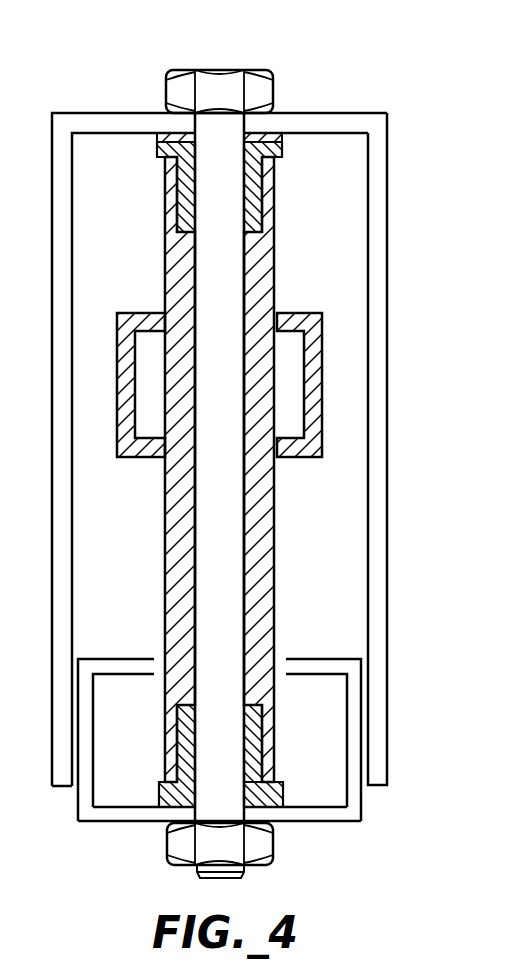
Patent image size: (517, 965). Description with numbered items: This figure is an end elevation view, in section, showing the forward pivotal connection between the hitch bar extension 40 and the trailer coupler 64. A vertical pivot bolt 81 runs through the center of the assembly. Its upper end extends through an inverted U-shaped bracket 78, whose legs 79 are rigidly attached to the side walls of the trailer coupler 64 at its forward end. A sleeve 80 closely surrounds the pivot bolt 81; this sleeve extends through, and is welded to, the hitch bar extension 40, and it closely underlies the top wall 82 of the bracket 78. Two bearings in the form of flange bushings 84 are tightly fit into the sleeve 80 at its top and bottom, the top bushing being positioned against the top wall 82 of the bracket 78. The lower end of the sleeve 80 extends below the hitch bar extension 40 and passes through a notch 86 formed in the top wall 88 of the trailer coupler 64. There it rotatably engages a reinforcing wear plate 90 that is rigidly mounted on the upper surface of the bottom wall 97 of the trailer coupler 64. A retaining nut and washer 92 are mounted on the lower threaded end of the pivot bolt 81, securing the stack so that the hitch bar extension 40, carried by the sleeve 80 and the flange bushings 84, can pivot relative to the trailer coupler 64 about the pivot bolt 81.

The hitch bar extension 40 is at (118, 410).
The trailer coupler 64 is at (363, 800).
The inverted U-shaped bracket 78 is at (393, 109).
The legs 79 is at (388, 678).
The sleeve 80 is at (165, 555).
The pivot bolt 81 is at (219, 70).
The top wall 82 is at (272, 125).
The flange bushings 84 is at (282, 150).
The notch 86 is at (280, 660).
The top wall 88 is at (118, 660).
The reinforcing wear plate 90 is at (159, 787).
The retaining nut and washer 92 is at (273, 847).
The bottom wall 97 is at (297, 807).